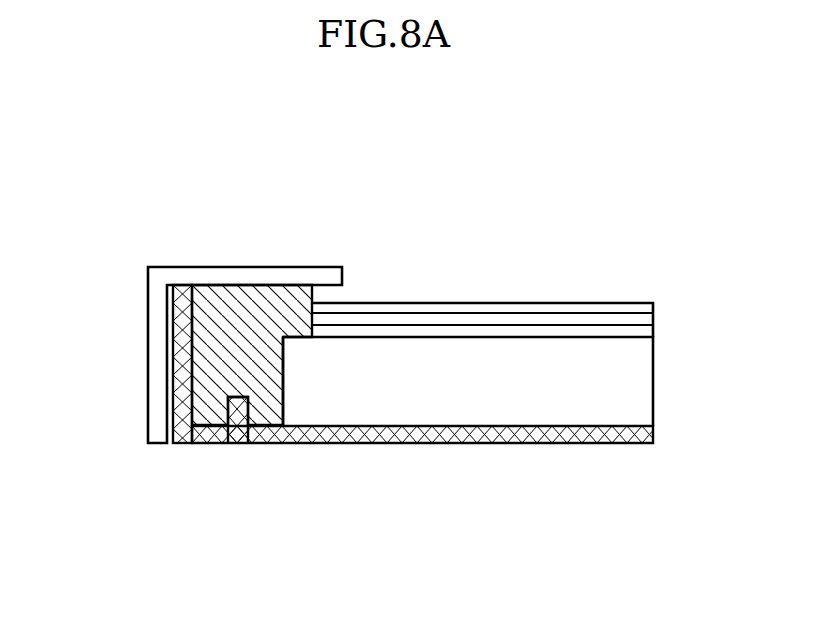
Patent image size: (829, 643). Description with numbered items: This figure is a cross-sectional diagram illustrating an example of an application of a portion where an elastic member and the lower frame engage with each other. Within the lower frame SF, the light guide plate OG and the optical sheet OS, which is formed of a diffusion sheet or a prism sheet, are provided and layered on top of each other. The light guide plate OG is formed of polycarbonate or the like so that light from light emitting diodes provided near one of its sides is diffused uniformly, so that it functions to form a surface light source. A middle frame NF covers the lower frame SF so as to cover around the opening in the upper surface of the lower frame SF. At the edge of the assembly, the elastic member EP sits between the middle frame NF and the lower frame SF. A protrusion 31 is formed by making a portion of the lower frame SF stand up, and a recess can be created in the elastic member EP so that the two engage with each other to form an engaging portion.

The middle frame NF is at (148, 302).
The elastic member EP is at (282, 308).
The optical sheet OS is at (660, 303).
The protrusion 31 is at (238, 408).
The lower frame SF is at (393, 432).
The light guide plate OG is at (463, 394).